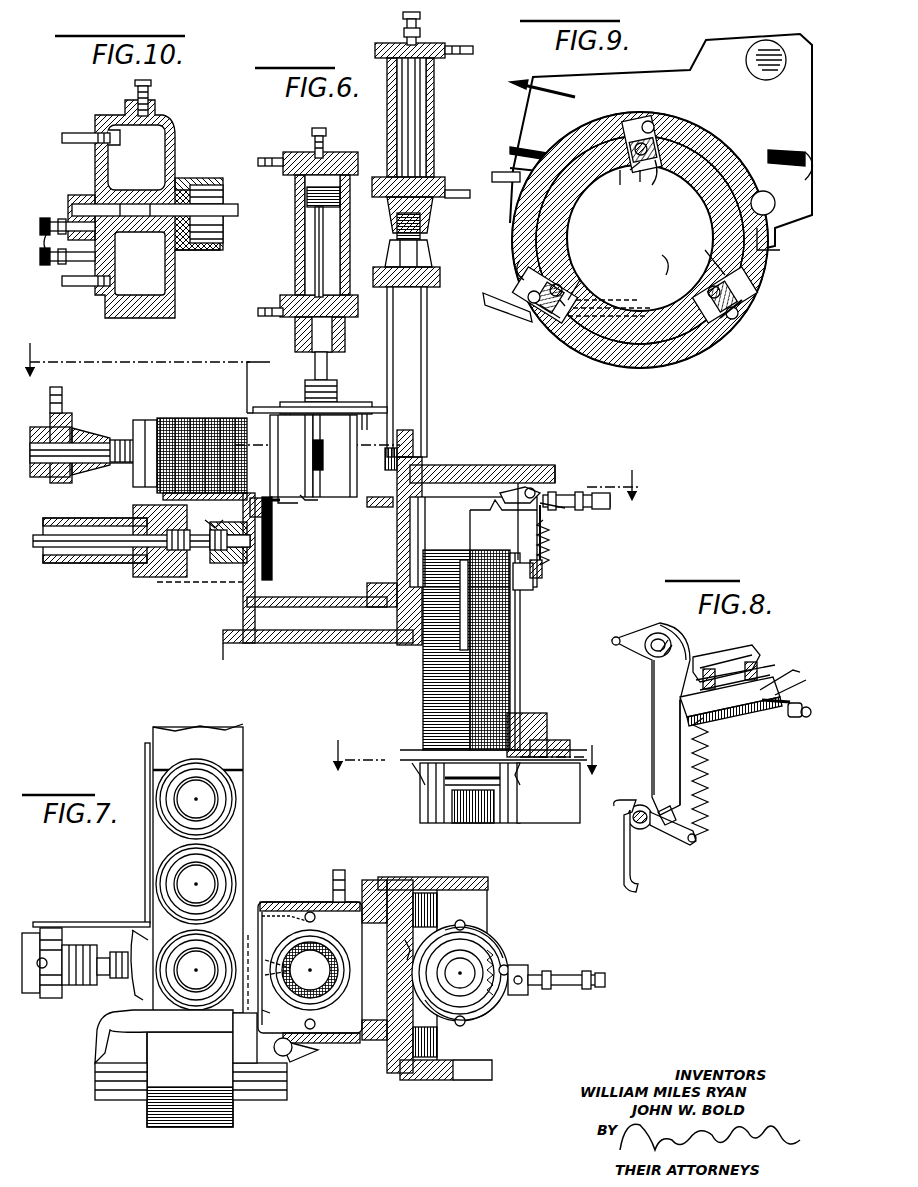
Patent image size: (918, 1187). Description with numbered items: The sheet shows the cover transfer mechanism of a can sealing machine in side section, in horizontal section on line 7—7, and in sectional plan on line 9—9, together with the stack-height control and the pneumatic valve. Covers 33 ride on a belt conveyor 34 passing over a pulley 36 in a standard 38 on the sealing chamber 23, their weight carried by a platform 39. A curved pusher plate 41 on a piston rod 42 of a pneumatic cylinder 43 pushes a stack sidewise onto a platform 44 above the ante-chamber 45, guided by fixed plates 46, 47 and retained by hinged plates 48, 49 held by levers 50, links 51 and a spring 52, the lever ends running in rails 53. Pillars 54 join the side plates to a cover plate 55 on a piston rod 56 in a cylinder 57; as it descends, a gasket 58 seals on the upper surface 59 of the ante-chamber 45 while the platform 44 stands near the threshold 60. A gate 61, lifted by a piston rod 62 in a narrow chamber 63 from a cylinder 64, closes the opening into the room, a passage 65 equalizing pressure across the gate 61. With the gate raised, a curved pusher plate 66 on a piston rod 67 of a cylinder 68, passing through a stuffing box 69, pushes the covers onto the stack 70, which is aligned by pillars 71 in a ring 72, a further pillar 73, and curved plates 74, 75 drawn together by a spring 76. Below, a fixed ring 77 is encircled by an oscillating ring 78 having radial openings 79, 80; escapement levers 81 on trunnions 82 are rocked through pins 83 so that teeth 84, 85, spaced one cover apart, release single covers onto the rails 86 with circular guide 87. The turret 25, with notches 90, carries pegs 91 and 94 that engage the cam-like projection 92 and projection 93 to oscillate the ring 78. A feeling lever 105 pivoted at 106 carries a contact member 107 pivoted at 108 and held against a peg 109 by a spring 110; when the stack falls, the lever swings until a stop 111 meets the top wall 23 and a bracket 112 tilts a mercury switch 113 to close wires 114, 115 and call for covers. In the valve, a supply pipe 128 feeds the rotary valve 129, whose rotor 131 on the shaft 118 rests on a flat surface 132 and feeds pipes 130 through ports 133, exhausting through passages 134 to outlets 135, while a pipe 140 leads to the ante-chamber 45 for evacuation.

In FIG. 6, the section line 7— 7 is at (336, 412).
In FIG. 6, the section line 9— 9 is at (465, 744).
In FIG. 7, the sealing chamber 23 is at (432, 1082).
In FIG. 6, the sealing chamber 23 is at (485, 464).
In FIG. 9, the rotating plate or turret 25 is at (502, 179).
In FIG. 6, the rotating plate or turret 25 is at (482, 815).
In FIG. 7, the covers 33 is at (220, 866).
In FIG. 6, the covers 33 is at (195, 432).
In FIG. 7, the belt conveyor 34 is at (232, 832).
In FIG. 6, the belt conveyor 34 is at (165, 496).
In FIG. 7, the pulley 36 is at (148, 1127).
In FIG. 7, the standard 38 is at (112, 1100).
In FIG. 6, the platform 39 is at (215, 514).
In FIG. 7, the pusher plate 41 is at (128, 935).
In FIG. 6, the pusher plate 41 is at (146, 425).
In FIG. 7, the piston rod 42 is at (102, 950).
In FIG. 6, the piston rod 42 is at (115, 440).
In FIG. 7, the pneumatically operated cylinder 43 is at (30, 940).
In FIG. 6, the pneumatically operated cylinder 43 is at (48, 420).
In FIG. 7, the platform 44 is at (262, 912).
In FIG. 6, the platform 44 is at (360, 497).
In FIG. 7, the ante-chamber 45 is at (292, 912).
In FIG. 6, the ante-chamber 45 is at (303, 607).
In FIG. 7, the fixed plate 46 is at (278, 912).
In FIG. 7, the fixed plate 47 is at (292, 1060).
In FIG. 6, the fixed plate 47 is at (280, 465).
In FIG. 7, the hinged plate 48 is at (368, 905).
In FIG. 7, the hinged plate 49 is at (325, 1020).
In FIG. 6, the hinged plate 49 is at (357, 445).
In FIG. 7, the levers 50 is at (340, 914).
In FIG. 6, the levers 50 is at (313, 500).
In FIG. 7, the links 51 is at (265, 942).
In FIG. 6, the links 51 is at (298, 505).
In FIG. 7, the spring 52 is at (266, 968).
In FIG. 6, the spring 52 is at (280, 506).
In FIG. 7, the rails 53 is at (263, 992).
In FIG. 6, the pillars 54 is at (286, 400).
In FIG. 6, the cover plate 55 is at (336, 395).
In FIG. 6, the piston rod 56 is at (316, 258).
In FIG. 6, the fluid pressure cylinder 57 is at (296, 222).
In FIG. 6, the gasket 58 is at (246, 392).
In FIG. 7, the upper surface 59 is at (240, 1042).
In FIG. 6, the upper surface 59 is at (262, 500).
In FIG. 6, the threshold 60 is at (386, 576).
In FIG. 7, the gate 61 is at (388, 992).
In FIG. 6, the gate 61 is at (397, 548).
In FIG. 6, the piston rod 62 is at (414, 350).
In FIG. 6, the narrow chamber 63 is at (428, 380).
In FIG. 6, the fluid pressure cylinder 64 is at (388, 135).
In FIG. 6, the passage 65 is at (422, 452).
In FIG. 7, the pusher plate 66 is at (240, 971).
In FIG. 6, the pusher plate 66 is at (272, 568).
In FIG. 6, the piston rod 67 is at (185, 550).
In FIG. 6, the pressure fluid cylinder 68 is at (100, 563).
In FIG. 6, the stuffing box 69 is at (222, 552).
In FIG. 7, the stack of covers 70 is at (450, 1010).
In FIG. 6, the stack of covers 70 is at (510, 645).
In FIG. 7, the pillars 71 is at (462, 920).
In FIG. 6, the pillars 71 is at (462, 590).
In FIG. 6, the ring 72 is at (517, 722).
In FIG. 7, the additional pillar 73 is at (413, 950).
In FIG. 6, the additional pillar 73 is at (422, 690).
In FIG. 7, the curved plate 74 is at (500, 955).
In FIG. 7, the curved plate 75 is at (495, 996).
In FIG. 6, the curved plate 75 is at (442, 520).
In FIG. 7, the spring 76 is at (490, 950).
In FIG. 9, the ring 77 is at (556, 160).
In FIG. 6, the ring 77 is at (538, 765).
In FIG. 9, the second ring 78 is at (577, 130).
In FIG. 6, the second ring 78 is at (548, 745).
In FIG. 9, the opening 79 is at (660, 168).
In FIG. 9, the opening 80 is at (520, 280).
In FIG. 9, the cover feeding escapement lever 81 is at (650, 145).
In FIG. 6, the cover feeding escapement lever 81 is at (420, 780).
In FIG. 9, the pivot pin 82 is at (660, 165).
In FIG. 6, the pivot pin 82 is at (410, 770).
In FIG. 9, the pin 83 is at (656, 120).
In FIG. 9, the feeding tooth 84 is at (622, 172).
In FIG. 9, the feeding tooth 85 is at (641, 172).
In FIG. 9, the rails 86 is at (630, 300).
In FIG. 6, the rails 86 is at (448, 815).
In FIG. 9, the circular guide 87 is at (512, 310).
In FIG. 9, the semi-circular notches 90 is at (570, 229).
In FIG. 6, the semi-circular notches 90 is at (515, 790).
In FIG. 9, the peg 91 is at (762, 190).
In FIG. 9, the cam-like projection 92 is at (775, 245).
In FIG. 9, the projection 93 is at (622, 108).
In FIG. 9, the peg or stud 94 is at (768, 80).
In FIG. 8, the feeling lever 105 is at (662, 706).
In FIG. 6, the feeling lever 105 is at (548, 535).
In FIG. 8, the pivot 106 is at (654, 635).
In FIG. 6, the pivot 106 is at (545, 480).
In FIG. 8, the contact member 107 is at (615, 857).
In FIG. 6, the contact member 107 is at (540, 572).
In FIG. 8, the pivot 108 is at (636, 805).
In FIG. 8, the peg 109 is at (660, 835).
In FIG. 8, the spring 110 is at (708, 776).
In FIG. 6, the spring 110 is at (550, 556).
In FIG. 8, the stop 111 is at (615, 637).
In FIG. 7, the stop 111 is at (520, 979).
In FIG. 6, the stop 111 is at (520, 485).
In FIG. 8, the bracket 112 is at (724, 718).
In FIG. 6, the bracket 112 is at (555, 510).
In FIG. 8, the mercury switch 113 is at (722, 665).
In FIG. 7, the mercury switch 113 is at (566, 972).
In FIG. 6, the mercury switch 113 is at (575, 492).
In FIG. 8, the conducting wire 114 is at (775, 672).
In FIG. 8, the conducting wire 115 is at (800, 675).
In FIG. 10, the shaft 118 is at (178, 188).
In FIG. 10, the supply pipe 128 is at (150, 89).
In FIG. 10, the rotary valve 129 is at (172, 126).
In FIG. 10, the pipes 130 is at (72, 132).
In FIG. 10, the rotor 131 is at (117, 161).
In FIG. 10, the flat surface 132 is at (100, 161).
In FIG. 10, the ports 133 is at (118, 136).
In FIG. 10, the passages 134 is at (116, 258).
In FIG. 10, the exhaust outlets 135 is at (62, 262).
In FIG. 7, the pipe 140 is at (341, 872).